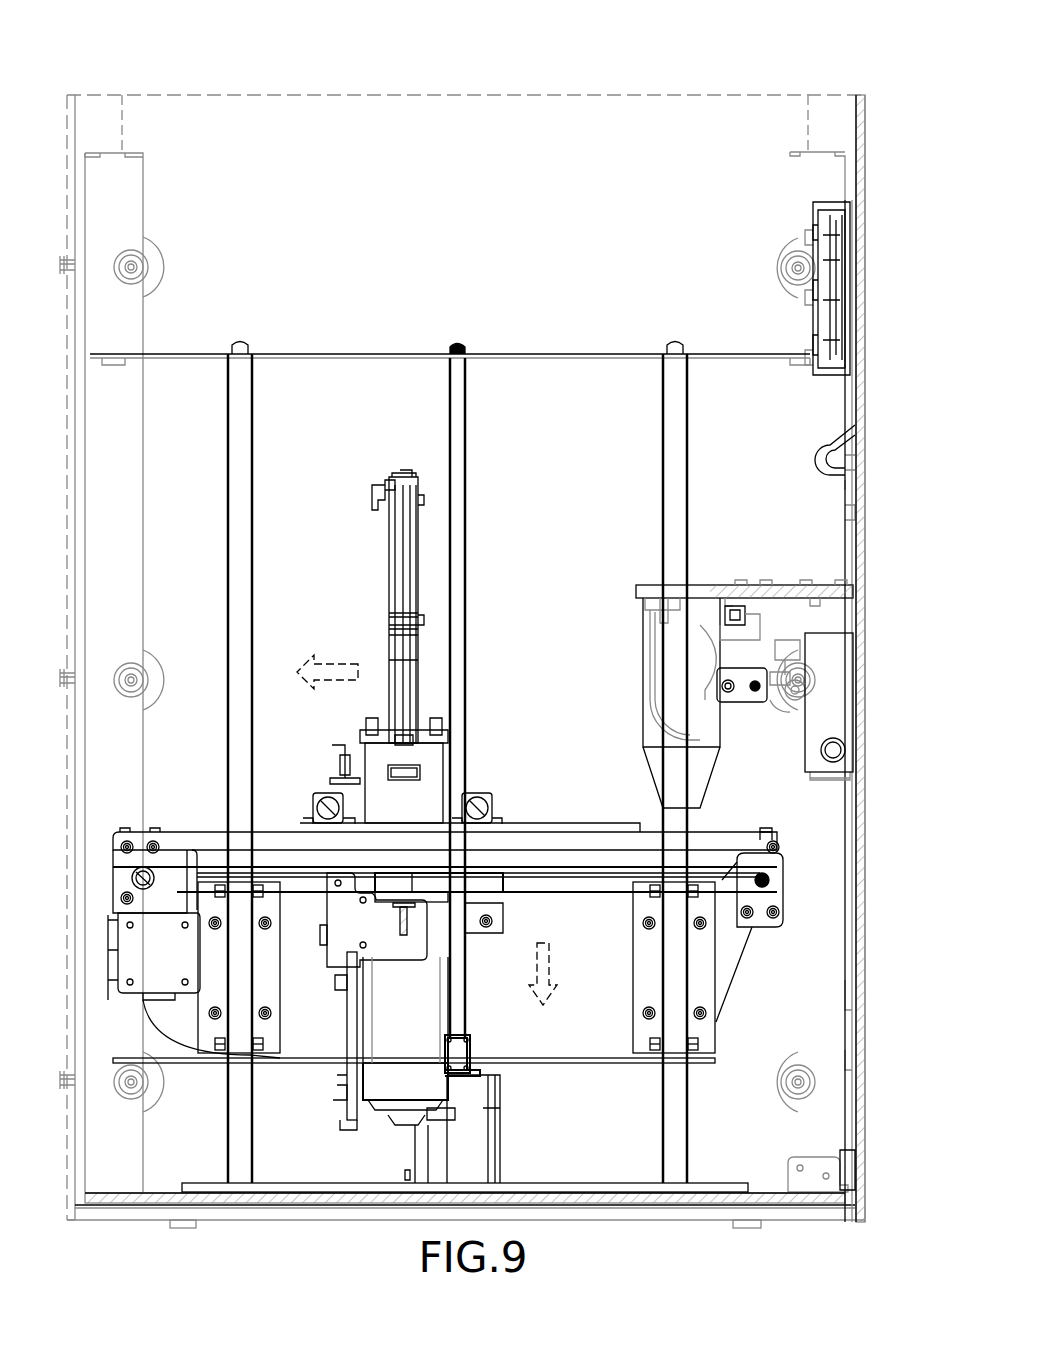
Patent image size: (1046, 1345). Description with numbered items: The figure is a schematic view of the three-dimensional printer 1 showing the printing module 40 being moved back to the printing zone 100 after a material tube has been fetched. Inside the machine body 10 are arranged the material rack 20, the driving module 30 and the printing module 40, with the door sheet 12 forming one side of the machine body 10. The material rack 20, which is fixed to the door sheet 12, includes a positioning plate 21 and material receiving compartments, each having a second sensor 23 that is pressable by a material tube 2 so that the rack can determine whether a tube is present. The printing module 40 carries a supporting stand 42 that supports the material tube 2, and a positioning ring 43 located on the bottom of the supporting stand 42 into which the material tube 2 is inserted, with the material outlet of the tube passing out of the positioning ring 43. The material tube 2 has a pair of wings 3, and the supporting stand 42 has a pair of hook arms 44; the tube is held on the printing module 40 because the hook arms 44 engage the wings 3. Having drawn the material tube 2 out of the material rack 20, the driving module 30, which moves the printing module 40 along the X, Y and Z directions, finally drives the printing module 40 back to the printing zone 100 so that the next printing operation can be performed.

The 3D printer 1 is at (546, 40).
The machine body 10 is at (712, 93).
The door sheet 12 is at (860, 533).
The positioning plate 21 is at (716, 592).
The second sensor 23 is at (727, 625).
The material rack 20 is at (762, 705).
The driving module 30 is at (172, 860).
The wings 3 is at (396, 920).
The hook arms 44 is at (415, 930).
The printing module 40 is at (320, 960).
The material tube 2 is at (425, 1005).
The supporting stand 42 is at (347, 1020).
The positioning ring 43 is at (442, 1117).
The printing zone 100 is at (368, 1182).